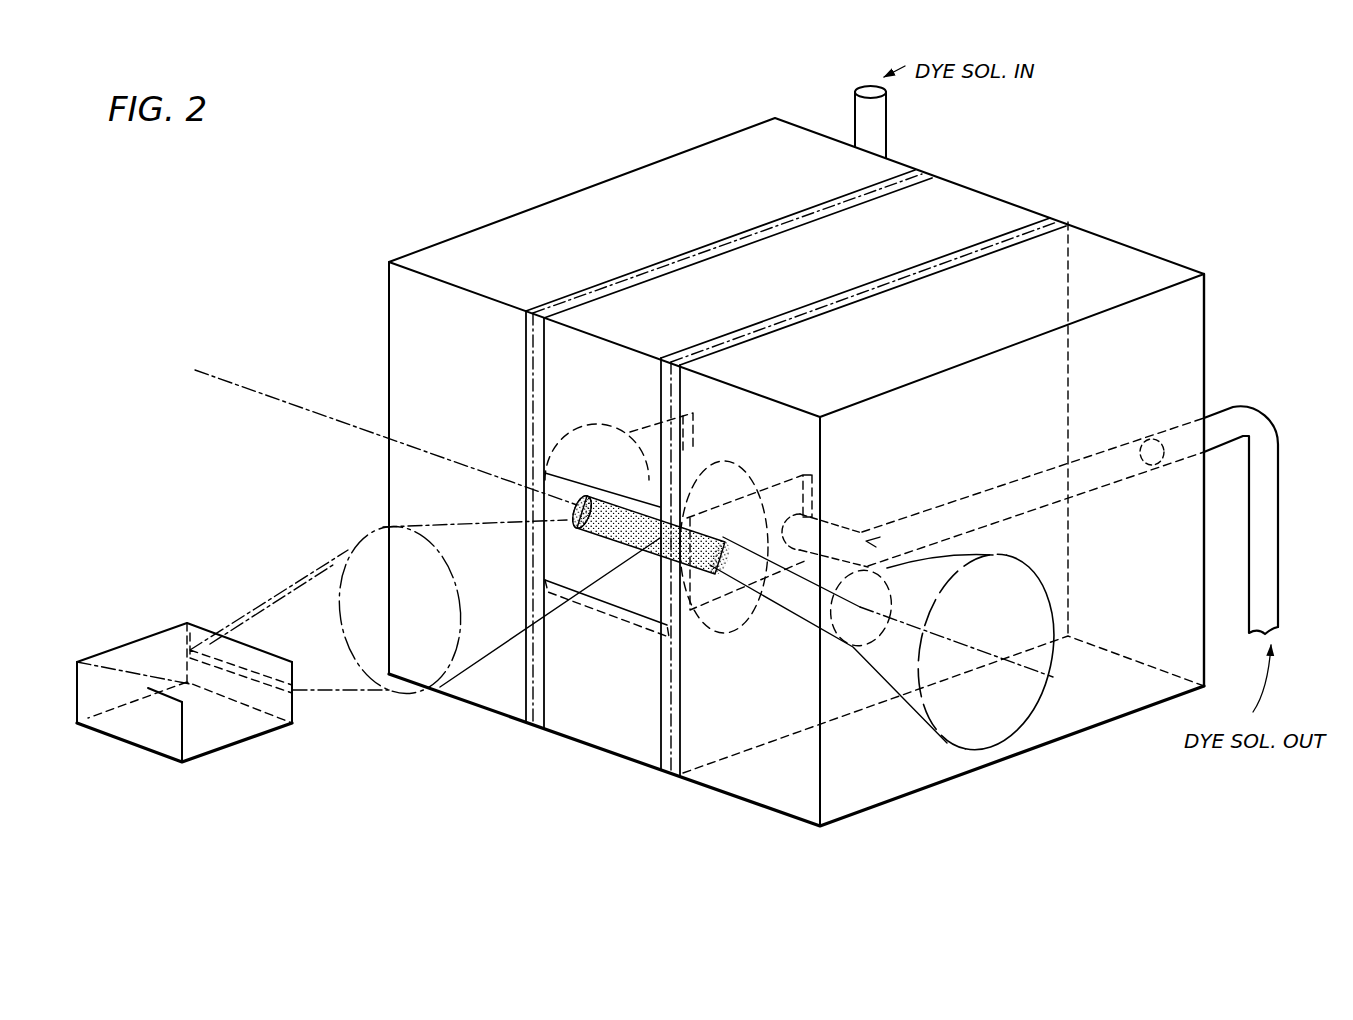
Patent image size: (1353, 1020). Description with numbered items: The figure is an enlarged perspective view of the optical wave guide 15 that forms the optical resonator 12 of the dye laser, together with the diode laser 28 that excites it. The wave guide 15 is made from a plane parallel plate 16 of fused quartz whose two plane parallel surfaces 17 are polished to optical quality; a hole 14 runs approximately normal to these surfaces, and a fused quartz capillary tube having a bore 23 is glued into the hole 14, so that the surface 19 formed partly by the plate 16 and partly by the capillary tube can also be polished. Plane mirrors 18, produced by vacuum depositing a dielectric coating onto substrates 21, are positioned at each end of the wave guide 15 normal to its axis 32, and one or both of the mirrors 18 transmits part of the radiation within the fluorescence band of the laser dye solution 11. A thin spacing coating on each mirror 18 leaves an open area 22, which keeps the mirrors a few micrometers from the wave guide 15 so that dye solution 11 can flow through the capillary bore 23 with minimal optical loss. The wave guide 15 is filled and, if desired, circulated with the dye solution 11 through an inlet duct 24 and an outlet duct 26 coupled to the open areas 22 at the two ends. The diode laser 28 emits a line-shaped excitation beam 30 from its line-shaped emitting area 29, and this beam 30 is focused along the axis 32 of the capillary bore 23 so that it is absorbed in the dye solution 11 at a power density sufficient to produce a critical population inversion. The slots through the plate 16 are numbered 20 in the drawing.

The laser dye solution 11 is at (590, 533).
The optical resonator 12 is at (613, 482).
The hole 14 is at (705, 451).
The wave guide 15 is at (578, 470).
The plane parallel plate 16 is at (580, 745).
The plane parallel surfaces 17 is at (727, 333).
The plane mirrors 18 is at (578, 293).
The surface 19 is at (635, 595).
The slot 20 is at (912, 272).
The substrates 21 is at (402, 390).
The open area 22 is at (700, 610).
The capillary bore 23 is at (612, 544).
The inlet duct 24 is at (878, 121).
The outlet duct 26 is at (1272, 585).
The diode laser 28 is at (148, 638).
The line-shaped emitting area 29 is at (233, 663).
The excitation beam 30 is at (345, 553).
The axis 32 is at (247, 390).